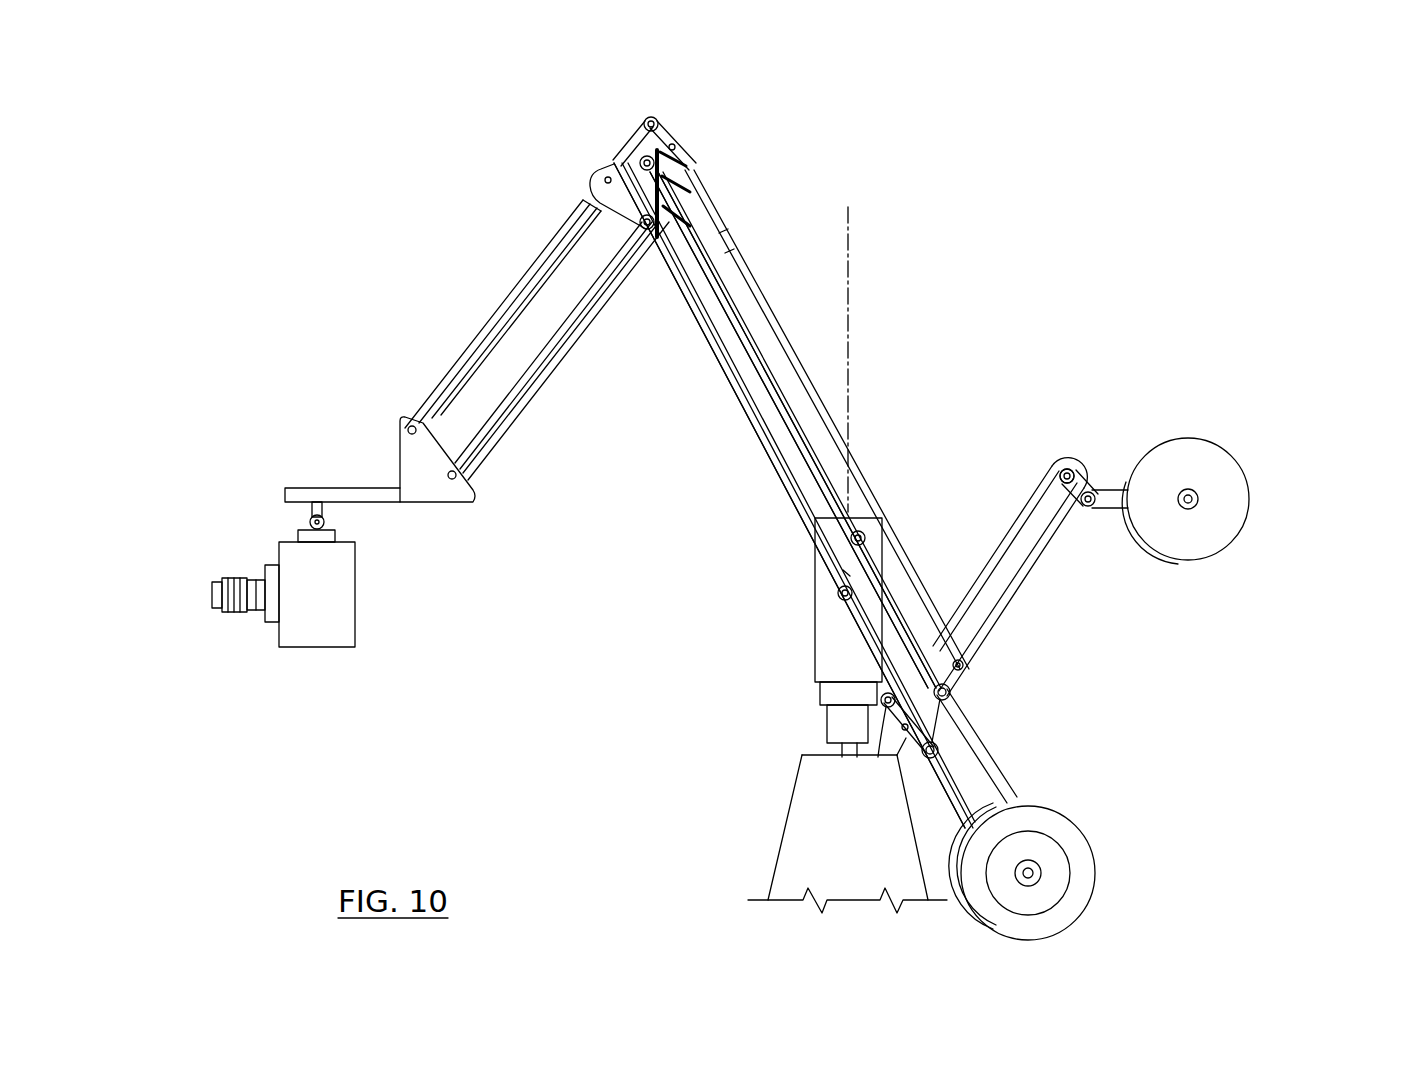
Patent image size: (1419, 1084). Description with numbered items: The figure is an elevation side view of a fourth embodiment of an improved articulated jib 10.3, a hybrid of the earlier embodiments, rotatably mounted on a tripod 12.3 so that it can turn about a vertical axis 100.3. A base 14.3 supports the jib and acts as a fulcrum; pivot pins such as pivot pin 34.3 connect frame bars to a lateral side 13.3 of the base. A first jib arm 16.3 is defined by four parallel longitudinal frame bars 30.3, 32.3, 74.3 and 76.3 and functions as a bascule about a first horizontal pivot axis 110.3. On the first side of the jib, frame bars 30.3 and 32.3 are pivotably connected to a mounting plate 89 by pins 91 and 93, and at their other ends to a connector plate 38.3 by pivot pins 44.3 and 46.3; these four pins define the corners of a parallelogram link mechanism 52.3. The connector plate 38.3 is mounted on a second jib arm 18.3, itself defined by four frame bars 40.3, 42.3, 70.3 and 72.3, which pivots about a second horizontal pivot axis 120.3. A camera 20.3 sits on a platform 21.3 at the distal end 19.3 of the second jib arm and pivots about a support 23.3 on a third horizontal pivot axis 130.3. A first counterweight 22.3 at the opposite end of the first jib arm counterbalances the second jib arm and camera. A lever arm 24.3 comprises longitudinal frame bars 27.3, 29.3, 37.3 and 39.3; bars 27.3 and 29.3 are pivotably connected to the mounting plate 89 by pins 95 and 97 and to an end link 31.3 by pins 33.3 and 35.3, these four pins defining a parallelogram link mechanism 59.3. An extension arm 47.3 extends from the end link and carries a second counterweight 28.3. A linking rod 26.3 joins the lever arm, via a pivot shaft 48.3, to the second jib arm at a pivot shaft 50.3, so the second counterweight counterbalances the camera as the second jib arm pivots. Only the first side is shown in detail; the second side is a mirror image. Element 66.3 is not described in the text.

The articulated jib 10.3 is at (392, 150).
The tripod 12.3 is at (795, 840).
The lateral side of the base 13.3 is at (832, 625).
The base 14.3 is at (825, 667).
The first jib arm 16.3 is at (715, 462).
The second jib arm 18.3 is at (524, 340).
The distal end of the second jib arm 19.3 is at (477, 490).
The camera 20.3 is at (318, 648).
The platform 21.3 is at (317, 500).
The first counterweight 22.3 is at (1082, 878).
The support 23.3 is at (310, 520).
The lever arm 24.3 is at (1050, 577).
The linking rod 26.3 is at (740, 268).
The longitudinal frame bar of the lever arm 27.3 is at (1053, 589).
The second counterweight 28.3 is at (1238, 500).
The longitudinal frame bar of the lever arm 29.3 is at (1000, 555).
The longitudinal frame bar of the first jib arm 30.3 is at (755, 427).
The end link 31.3 is at (1075, 470).
The longitudinal frame bar of the first jib arm 32.3 is at (735, 322).
The pin 33.3 is at (1088, 492).
The pivot pin 34.3 is at (838, 597).
The pin 35.3 is at (1060, 470).
The longitudinal frame bar of the lever arm 37.3 is at (1035, 592).
The connector plate 38.3 is at (572, 168).
The longitudinal frame bar of the lever arm 39.3 is at (1038, 527).
The longitudinal frame bar of the second jib arm 40.3 is at (508, 395).
The longitudinal frame bar of the second jib arm 42.3 is at (505, 310).
The pivot pin 44.3 is at (660, 212).
The pivot pin 46.3 is at (640, 160).
The extension arm 47.3 is at (1115, 490).
The pivot shaft 48.3 is at (960, 672).
The pivot shaft 50.3 is at (660, 130).
The parallelogram link mechanism 52.3 is at (770, 406).
The parallelogram link mechanism 59.3 is at (998, 620).
The plate aperture 66.3 is at (625, 183).
The longitudinal frame bar of the second jib arm 70.3 is at (483, 438).
The longitudinal frame bar of the second jib arm 72.3 is at (497, 340).
The longitudinal frame bar of the first jib arm 74.3 is at (745, 430).
The longitudinal frame bar of the first jib arm 76.3 is at (744, 366).
The mounting plate 89 is at (940, 720).
The pin 91 is at (940, 755).
The pin 93 is at (951, 692).
The pin 95 is at (893, 752).
The pin 97 is at (882, 702).
The vertical axis 100.3 is at (848, 226).
The first horizontal pivot axis 110.3 is at (845, 573).
The second horizontal pivot axis 120.3 is at (618, 198).
The third horizontal pivot axis 130.3 is at (325, 518).